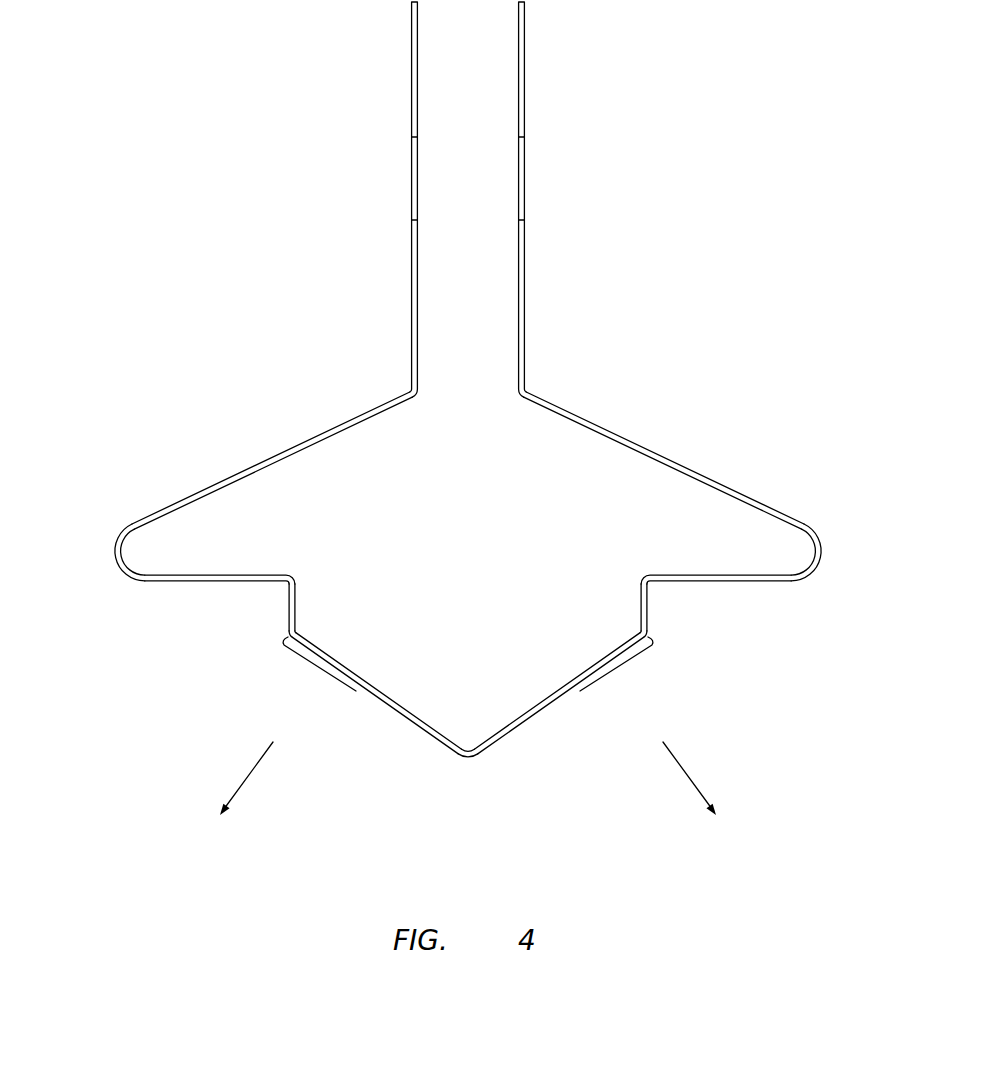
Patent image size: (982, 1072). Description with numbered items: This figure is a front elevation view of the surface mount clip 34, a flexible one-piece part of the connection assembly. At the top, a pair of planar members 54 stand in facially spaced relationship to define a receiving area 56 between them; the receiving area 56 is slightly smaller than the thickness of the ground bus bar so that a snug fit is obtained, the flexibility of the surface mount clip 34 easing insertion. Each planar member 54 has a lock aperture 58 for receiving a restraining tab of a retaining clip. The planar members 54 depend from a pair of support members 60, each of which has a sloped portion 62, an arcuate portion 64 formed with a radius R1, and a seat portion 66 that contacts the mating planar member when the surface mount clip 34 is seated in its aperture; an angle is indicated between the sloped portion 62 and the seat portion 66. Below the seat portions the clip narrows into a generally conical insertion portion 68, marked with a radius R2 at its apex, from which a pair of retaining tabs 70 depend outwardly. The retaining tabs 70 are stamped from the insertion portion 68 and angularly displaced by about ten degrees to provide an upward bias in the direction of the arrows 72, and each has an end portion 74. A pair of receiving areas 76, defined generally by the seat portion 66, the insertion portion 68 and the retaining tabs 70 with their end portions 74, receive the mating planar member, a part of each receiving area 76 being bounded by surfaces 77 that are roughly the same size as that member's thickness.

The surface mount clip 34 is at (780, 149).
The planar members 54 is at (411, 107).
The receiving area 56 is at (486, 140).
The lock aperture 58 is at (412, 220).
The support members 60 is at (163, 483).
The sloped portion 62 is at (272, 452).
The arcuate portion 64 is at (115, 553).
The seat portion 66 is at (143, 583).
The insertion portion 68 is at (470, 762).
The retaining tabs 70 is at (311, 664).
The arrows 72 is at (243, 780).
The end portion 74 is at (284, 646).
The receiving areas 76 is at (278, 617).
The surfaces 77 is at (289, 600).
The radius R1 is at (123, 546).
The second bend radius R2 is at (469, 745).